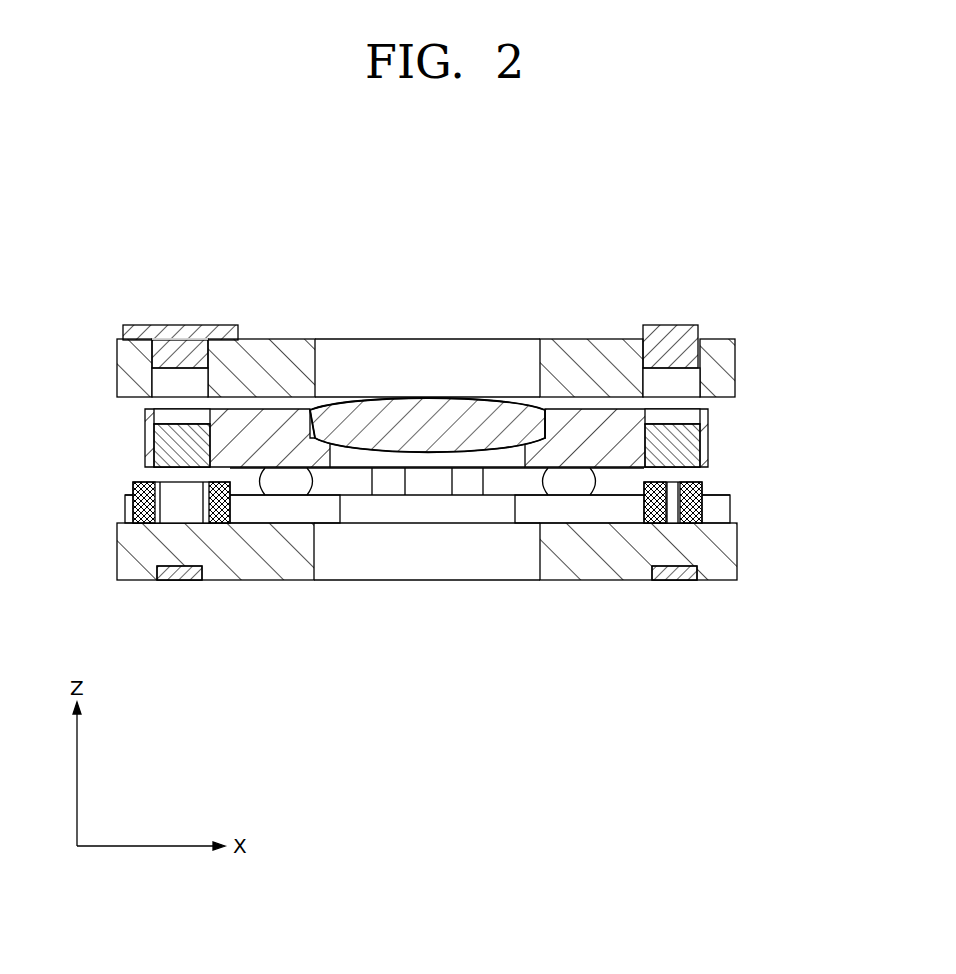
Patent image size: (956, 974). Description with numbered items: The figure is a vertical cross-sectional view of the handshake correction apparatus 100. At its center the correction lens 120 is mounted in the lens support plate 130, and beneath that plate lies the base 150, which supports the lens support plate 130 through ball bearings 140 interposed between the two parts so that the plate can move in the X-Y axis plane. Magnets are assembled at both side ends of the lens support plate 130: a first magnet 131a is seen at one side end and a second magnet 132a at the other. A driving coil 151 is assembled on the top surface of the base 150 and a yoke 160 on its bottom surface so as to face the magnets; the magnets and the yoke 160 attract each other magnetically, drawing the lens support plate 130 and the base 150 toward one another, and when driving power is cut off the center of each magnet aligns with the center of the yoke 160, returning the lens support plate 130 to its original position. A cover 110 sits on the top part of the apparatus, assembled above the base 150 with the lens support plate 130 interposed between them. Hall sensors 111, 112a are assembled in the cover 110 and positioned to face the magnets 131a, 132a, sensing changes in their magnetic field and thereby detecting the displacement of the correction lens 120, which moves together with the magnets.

The handshake correction apparatus 100 is at (676, 303).
The cover 110 is at (737, 369).
The Hall sensor 111 is at (186, 325).
The Hall sensor 112a is at (700, 333).
The correction lens 120 is at (428, 418).
The lens support plate 130 is at (703, 418).
The first magnet 131a is at (152, 441).
The second magnet 132a is at (687, 450).
The ball bearings 140 is at (548, 484).
The base 150 is at (737, 553).
The driving coil 151 is at (702, 512).
The yoke 160 is at (677, 580).